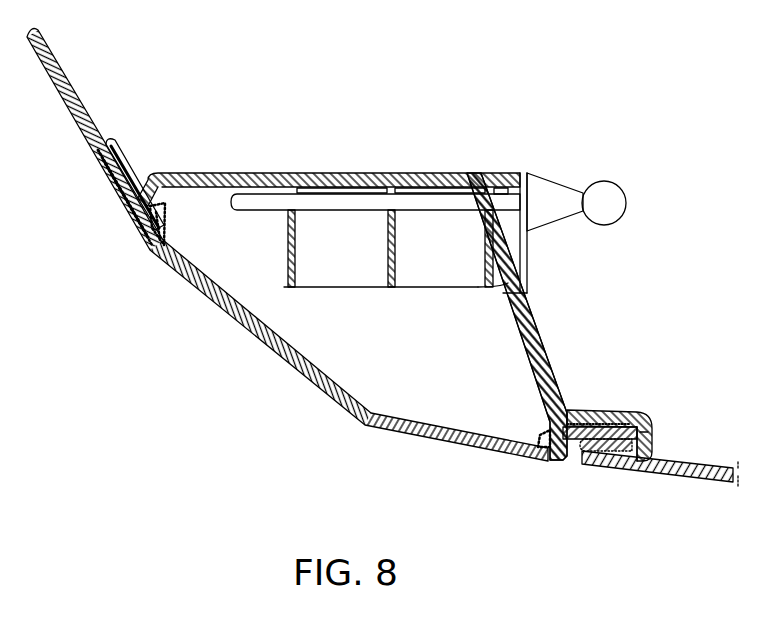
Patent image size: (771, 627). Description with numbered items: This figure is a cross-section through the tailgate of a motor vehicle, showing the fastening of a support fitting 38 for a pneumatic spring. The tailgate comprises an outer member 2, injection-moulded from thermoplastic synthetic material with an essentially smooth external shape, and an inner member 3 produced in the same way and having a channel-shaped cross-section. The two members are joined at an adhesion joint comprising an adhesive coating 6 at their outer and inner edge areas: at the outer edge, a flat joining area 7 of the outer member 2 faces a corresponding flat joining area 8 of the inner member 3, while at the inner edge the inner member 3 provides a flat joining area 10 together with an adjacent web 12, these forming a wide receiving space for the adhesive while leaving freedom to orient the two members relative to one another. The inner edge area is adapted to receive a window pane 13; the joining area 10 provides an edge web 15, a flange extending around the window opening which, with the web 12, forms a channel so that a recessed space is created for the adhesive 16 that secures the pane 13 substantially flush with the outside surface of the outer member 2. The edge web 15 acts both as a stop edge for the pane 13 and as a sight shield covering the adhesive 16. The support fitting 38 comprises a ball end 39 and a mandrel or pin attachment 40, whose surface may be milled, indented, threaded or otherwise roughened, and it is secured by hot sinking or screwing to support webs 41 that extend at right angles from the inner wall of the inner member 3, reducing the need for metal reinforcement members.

The outer member 2 is at (237, 325).
The inner member 3 is at (252, 172).
The adhesive coating 6 is at (150, 248).
The flat joining area 7 is at (110, 198).
The flat joining area 8 is at (118, 172).
The flat joining area 10 is at (622, 412).
The web 12 is at (552, 427).
The window pane 13 is at (668, 476).
The edge web 15 is at (652, 443).
The adhesive 16 is at (592, 460).
The support fitting 38 is at (557, 168).
The ball end 39 is at (607, 197).
The pin attachment 40 is at (355, 200).
The support webs 41 is at (293, 272).